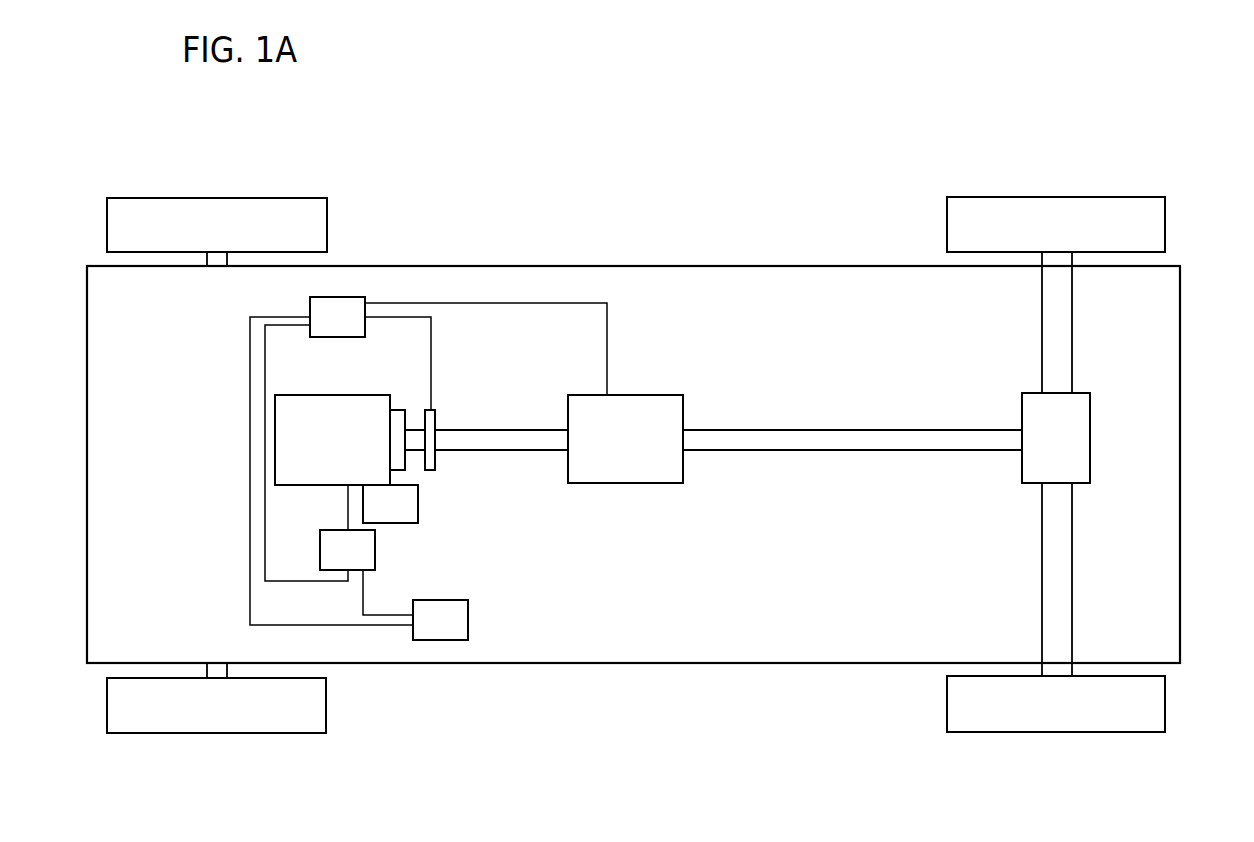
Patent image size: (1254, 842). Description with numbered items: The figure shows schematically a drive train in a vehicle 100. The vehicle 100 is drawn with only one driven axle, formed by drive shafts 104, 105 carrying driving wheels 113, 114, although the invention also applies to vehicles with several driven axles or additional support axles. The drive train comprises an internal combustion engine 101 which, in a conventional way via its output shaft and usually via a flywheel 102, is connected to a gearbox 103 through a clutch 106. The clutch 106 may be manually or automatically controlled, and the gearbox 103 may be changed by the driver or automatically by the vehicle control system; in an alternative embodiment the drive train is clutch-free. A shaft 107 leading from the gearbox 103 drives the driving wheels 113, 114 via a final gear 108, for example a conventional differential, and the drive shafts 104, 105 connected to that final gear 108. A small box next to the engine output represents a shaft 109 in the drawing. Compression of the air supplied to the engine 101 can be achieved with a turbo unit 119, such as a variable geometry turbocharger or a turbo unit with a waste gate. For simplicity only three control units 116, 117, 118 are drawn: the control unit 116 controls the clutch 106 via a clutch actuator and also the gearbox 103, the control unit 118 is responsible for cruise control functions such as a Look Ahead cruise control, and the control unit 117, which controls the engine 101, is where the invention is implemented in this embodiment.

The vehicle 100 is at (548, 95).
The internal combustion engine 101 is at (306, 476).
The flywheel 102 is at (396, 424).
The gearbox 103 is at (627, 405).
The drive shaft 104 is at (1060, 321).
The drive shaft 105 is at (1065, 587).
The clutch 106 is at (436, 481).
The shaft 107 is at (943, 445).
The final gear 108 is at (1085, 433).
The input shaft 109 is at (540, 441).
The driving wheel 113 is at (1160, 216).
The driving wheel 114 is at (1160, 705).
The control unit 116 is at (329, 334).
The control unit 117 is at (366, 572).
The control unit 118 is at (455, 616).
The turbo unit 119 is at (407, 518).